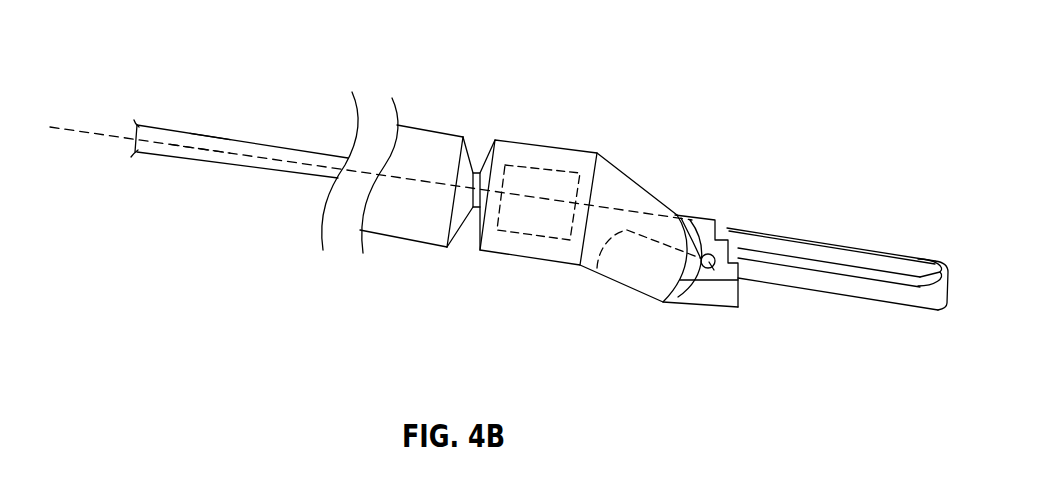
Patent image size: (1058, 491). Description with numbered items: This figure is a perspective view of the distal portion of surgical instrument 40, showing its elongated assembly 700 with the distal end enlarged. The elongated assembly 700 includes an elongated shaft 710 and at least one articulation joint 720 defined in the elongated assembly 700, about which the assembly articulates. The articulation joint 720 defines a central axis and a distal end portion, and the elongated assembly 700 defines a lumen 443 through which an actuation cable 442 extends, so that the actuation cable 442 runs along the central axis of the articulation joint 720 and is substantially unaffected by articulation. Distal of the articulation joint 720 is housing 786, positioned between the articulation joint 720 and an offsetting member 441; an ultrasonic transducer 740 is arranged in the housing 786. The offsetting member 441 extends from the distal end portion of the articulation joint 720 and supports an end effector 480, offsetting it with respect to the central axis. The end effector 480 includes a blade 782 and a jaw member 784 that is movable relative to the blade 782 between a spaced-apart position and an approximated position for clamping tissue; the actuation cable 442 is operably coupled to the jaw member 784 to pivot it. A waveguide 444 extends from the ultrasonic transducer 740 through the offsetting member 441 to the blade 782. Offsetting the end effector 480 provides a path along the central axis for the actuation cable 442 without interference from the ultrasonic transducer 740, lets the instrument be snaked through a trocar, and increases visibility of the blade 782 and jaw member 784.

The elongated assembly 700 is at (803, 55).
The surgical instrument 40 is at (297, 92).
The elongated shaft 710 is at (273, 176).
The lumen 443 is at (201, 143).
The actuation cable 442 is at (183, 150).
The articulation joint 720 is at (489, 128).
The housing 786 is at (573, 150).
The ultrasonic transducer 740 is at (533, 238).
The offsetting member 441 is at (630, 193).
The waveguide 444 is at (597, 268).
The end effector 480 is at (855, 326).
The jaw member 784 is at (790, 249).
The blade 782 is at (777, 287).